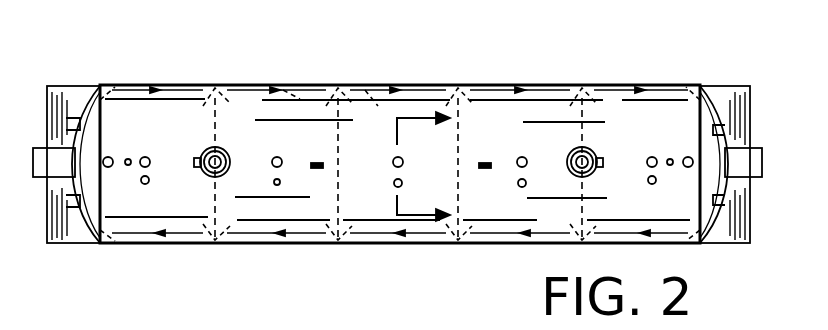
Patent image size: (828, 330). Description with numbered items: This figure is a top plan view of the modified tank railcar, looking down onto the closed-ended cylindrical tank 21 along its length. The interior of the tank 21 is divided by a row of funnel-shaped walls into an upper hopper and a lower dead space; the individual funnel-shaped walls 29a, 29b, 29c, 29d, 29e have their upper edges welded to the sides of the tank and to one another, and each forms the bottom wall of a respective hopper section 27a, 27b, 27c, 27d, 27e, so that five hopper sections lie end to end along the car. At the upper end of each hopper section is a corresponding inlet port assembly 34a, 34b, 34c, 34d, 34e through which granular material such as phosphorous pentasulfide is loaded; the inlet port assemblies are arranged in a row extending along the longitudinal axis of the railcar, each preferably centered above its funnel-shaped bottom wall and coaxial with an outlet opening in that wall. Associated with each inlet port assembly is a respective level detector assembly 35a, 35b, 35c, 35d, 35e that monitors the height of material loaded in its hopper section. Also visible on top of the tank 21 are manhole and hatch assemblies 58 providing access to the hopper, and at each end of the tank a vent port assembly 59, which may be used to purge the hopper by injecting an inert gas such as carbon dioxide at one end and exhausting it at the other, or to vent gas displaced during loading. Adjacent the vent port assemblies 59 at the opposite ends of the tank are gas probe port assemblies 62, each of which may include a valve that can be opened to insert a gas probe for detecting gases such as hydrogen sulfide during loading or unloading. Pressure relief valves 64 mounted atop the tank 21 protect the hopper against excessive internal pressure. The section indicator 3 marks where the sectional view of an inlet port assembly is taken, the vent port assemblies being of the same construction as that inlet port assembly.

The section line of FIG. 3 is at (425, 166).
The cylindrical tank 21 is at (70, 181).
The hopper section 27a is at (125, 98).
The hopper section 27b is at (284, 86).
The hopper section 27c is at (361, 86).
The hopper section 27d is at (490, 86).
The hopper section 27e is at (600, 90).
The funnel-shaped wall 29a is at (117, 252).
The funnel-shaped wall 29b is at (222, 252).
The funnel-shaped wall 29c is at (347, 254).
The funnel-shaped wall 29d is at (472, 252).
The funnel-shaped wall 29e is at (684, 253).
The inlet port assembly 34a is at (160, 147).
The inlet port assembly 34b is at (272, 163).
The inlet port assembly 34c is at (393, 163).
The inlet port assembly 34d is at (524, 157).
The inlet port assembly 34e is at (650, 157).
The level detector assembly 35a is at (147, 184).
The level detector assembly 35b is at (281, 182).
The level detector assembly 35c is at (396, 187).
The level detector assembly 35d is at (519, 185).
The level detector assembly 35e is at (655, 184).
The manhole and hatch assembly 58 is at (227, 154).
The vent port assembly 59 is at (109, 157).
The gas probe port assembly 62 is at (130, 159).
The pressure relief valve 64 is at (315, 162).